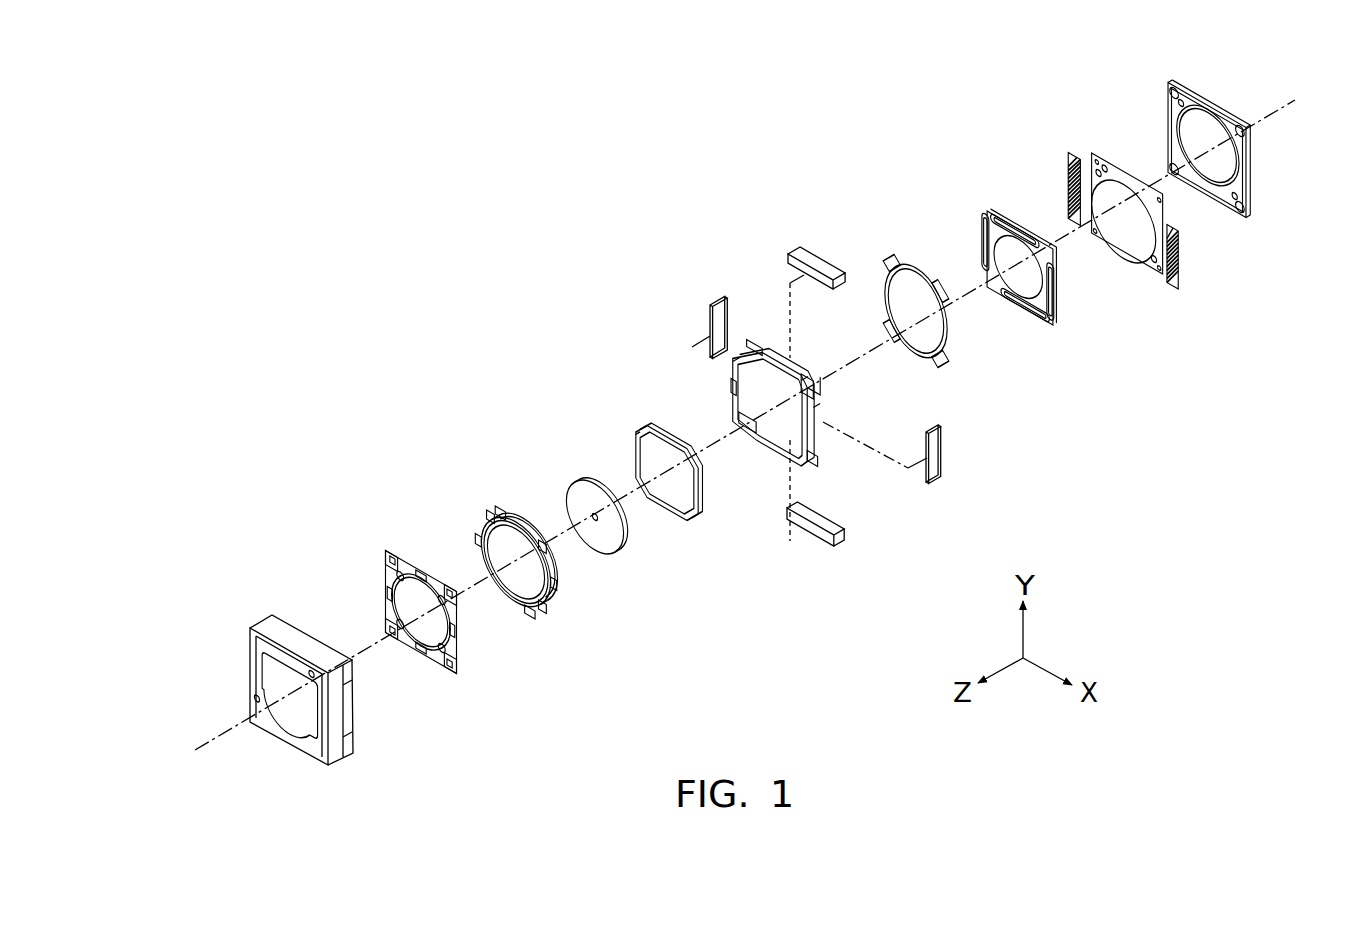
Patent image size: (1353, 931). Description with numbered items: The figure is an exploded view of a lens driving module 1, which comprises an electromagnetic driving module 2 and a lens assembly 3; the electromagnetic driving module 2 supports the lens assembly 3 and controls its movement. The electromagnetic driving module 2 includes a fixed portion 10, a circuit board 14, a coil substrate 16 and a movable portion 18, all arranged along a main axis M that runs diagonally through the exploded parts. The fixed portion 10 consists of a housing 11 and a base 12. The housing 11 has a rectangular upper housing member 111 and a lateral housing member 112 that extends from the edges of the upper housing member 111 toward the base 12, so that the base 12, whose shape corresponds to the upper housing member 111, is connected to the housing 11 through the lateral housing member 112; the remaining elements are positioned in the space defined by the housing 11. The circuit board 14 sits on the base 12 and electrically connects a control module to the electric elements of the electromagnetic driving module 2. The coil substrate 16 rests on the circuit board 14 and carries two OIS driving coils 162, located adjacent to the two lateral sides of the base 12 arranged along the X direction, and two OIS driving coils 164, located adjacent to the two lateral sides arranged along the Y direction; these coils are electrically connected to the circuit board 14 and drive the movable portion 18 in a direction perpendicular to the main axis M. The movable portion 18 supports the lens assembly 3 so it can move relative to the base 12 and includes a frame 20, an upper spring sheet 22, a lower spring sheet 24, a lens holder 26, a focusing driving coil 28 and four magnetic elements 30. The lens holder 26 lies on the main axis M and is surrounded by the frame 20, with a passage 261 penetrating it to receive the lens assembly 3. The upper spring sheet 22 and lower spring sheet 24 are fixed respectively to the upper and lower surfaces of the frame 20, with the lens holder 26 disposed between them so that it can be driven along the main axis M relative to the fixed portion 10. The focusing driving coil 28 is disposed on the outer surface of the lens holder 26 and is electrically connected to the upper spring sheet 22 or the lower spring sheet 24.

The lens driving module 1 is at (388, 226).
The electromagnetic driving module 2 is at (588, 478).
The lens assembly 3 is at (583, 488).
The fixed portion 10 is at (300, 674).
The housing 11 is at (257, 665).
The upper housing member 111 is at (246, 694).
The lateral housing member 112 is at (308, 640).
The base 12 is at (1163, 121).
The circuit board 14 is at (1087, 152).
The coil substrate 16 is at (1020, 276).
The OIS driving coils 162 is at (975, 238).
The OIS driving coils 164 is at (1018, 220).
The movable portion 18 is at (967, 432).
The frame 20 is at (767, 345).
The upper spring sheet 22 is at (385, 548).
The lower spring sheet 24 is at (887, 262).
The lens holder 26 is at (509, 562).
The passage 261 is at (526, 584).
The focusing driving coil 28 is at (640, 432).
The magnetic elements 30 is at (718, 298).
The main axis M is at (210, 748).